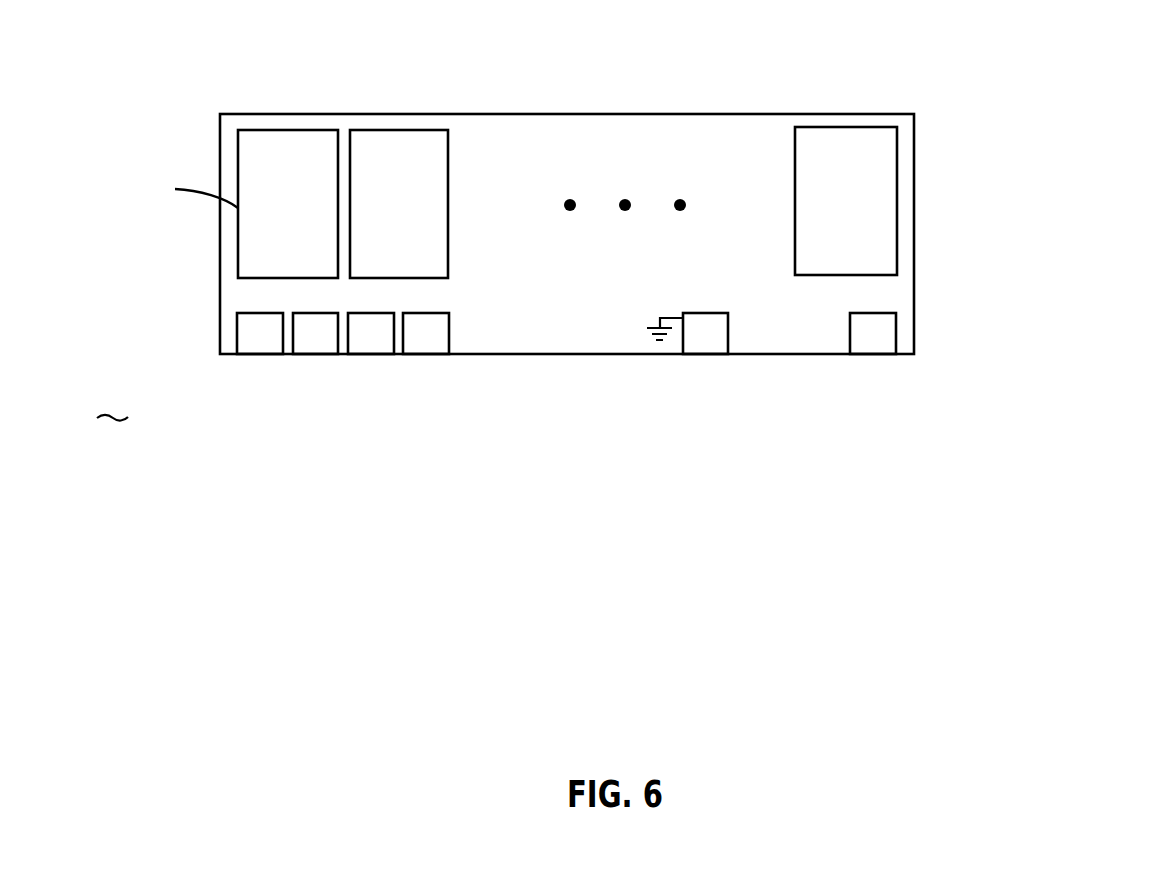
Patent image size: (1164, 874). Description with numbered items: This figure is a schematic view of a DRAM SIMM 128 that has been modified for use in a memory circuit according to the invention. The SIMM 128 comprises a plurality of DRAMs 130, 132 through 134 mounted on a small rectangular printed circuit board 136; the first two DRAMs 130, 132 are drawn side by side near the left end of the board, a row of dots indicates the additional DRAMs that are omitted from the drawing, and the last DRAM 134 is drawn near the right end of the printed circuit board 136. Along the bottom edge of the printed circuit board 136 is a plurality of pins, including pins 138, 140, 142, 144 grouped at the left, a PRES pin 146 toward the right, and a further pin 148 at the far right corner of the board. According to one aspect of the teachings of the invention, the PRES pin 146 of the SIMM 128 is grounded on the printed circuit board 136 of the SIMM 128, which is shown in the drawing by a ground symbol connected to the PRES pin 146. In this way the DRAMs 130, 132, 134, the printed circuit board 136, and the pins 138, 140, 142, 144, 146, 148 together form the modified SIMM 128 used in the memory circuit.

The SIMM 128 is at (1040, 92).
The DRAM 130 is at (290, 130).
The DRAM 132 is at (402, 130).
The DRAM 134 is at (846, 128).
The printed circuit board 136 is at (578, 114).
The pin 138 is at (260, 355).
The pin 140 is at (317, 355).
The pin 142 is at (368, 355).
The pin 144 is at (425, 355).
The PRES pin 146 is at (703, 355).
The pin 148 is at (870, 355).